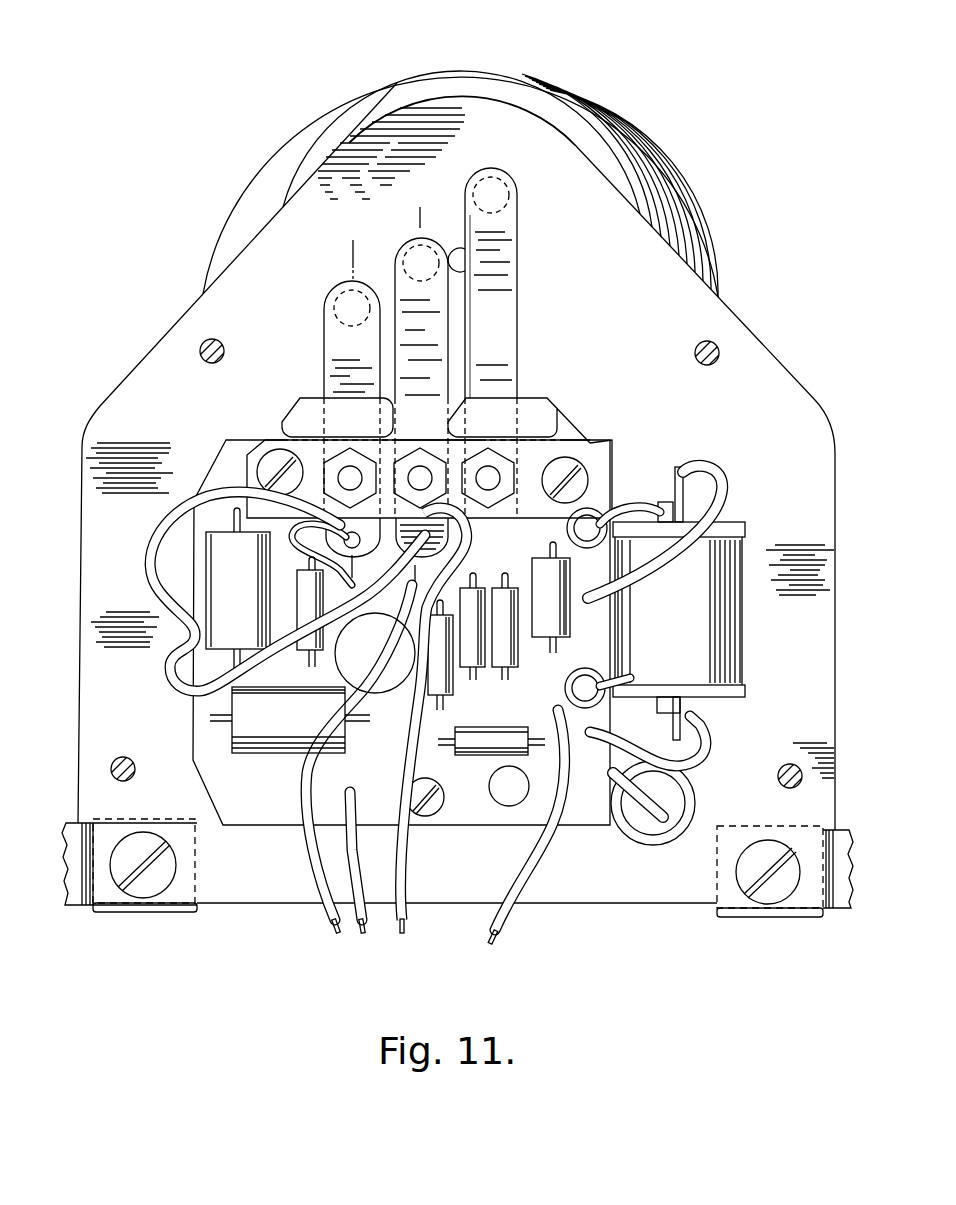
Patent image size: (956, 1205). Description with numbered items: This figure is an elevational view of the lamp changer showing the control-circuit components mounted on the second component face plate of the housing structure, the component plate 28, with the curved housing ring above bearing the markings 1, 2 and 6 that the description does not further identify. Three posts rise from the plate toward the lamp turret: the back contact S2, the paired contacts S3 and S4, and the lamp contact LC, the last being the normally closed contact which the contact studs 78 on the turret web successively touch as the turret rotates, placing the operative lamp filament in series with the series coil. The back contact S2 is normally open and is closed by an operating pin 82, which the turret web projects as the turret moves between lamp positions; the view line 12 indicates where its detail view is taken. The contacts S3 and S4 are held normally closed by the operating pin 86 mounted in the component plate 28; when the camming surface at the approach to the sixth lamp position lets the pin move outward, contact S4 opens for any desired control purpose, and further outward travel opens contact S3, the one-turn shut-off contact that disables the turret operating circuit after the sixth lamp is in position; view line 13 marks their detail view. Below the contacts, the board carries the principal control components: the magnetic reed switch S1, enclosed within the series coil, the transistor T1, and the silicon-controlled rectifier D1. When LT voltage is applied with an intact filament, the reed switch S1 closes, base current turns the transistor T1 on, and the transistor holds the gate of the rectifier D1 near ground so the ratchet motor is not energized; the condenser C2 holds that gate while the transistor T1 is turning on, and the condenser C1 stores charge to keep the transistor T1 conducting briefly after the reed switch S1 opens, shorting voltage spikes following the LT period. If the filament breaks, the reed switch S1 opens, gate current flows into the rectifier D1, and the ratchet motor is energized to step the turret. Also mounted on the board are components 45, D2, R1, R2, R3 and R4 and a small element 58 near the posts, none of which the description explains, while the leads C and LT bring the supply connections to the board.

The housing ring 1 is at (470, 58).
The ring bore surface 2 is at (620, 185).
The annular flange 6 is at (460, 184).
The wire terminal lead 12 is at (344, 254).
The wire terminal lead 13 is at (411, 220).
The component plate 28 is at (768, 366).
The capacitor 45 is at (300, 596).
The contact pin 58 is at (462, 253).
The contact studs 78 is at (491, 169).
The operating pin 82 is at (369, 293).
The operating pin 86 is at (405, 252).
The lamp contact LC is at (512, 179).
The magnetic reed switch S1 is at (684, 614).
The back contact S2 is at (335, 300).
The contact S3 is at (421, 240).
The contact S4 is at (426, 241).
The condenser C1 is at (298, 722).
The condenser C2 is at (250, 585).
The silicon-controlled rectifier D1 is at (382, 647).
The diode D2 is at (548, 562).
The resistor R1 is at (483, 590).
The resistor R2 is at (511, 592).
The resistor R3 is at (491, 735).
The resistor R4 is at (447, 612).
The transistor T1 is at (517, 796).
The common lead C is at (338, 939).
The LT voltage LT is at (523, 843).